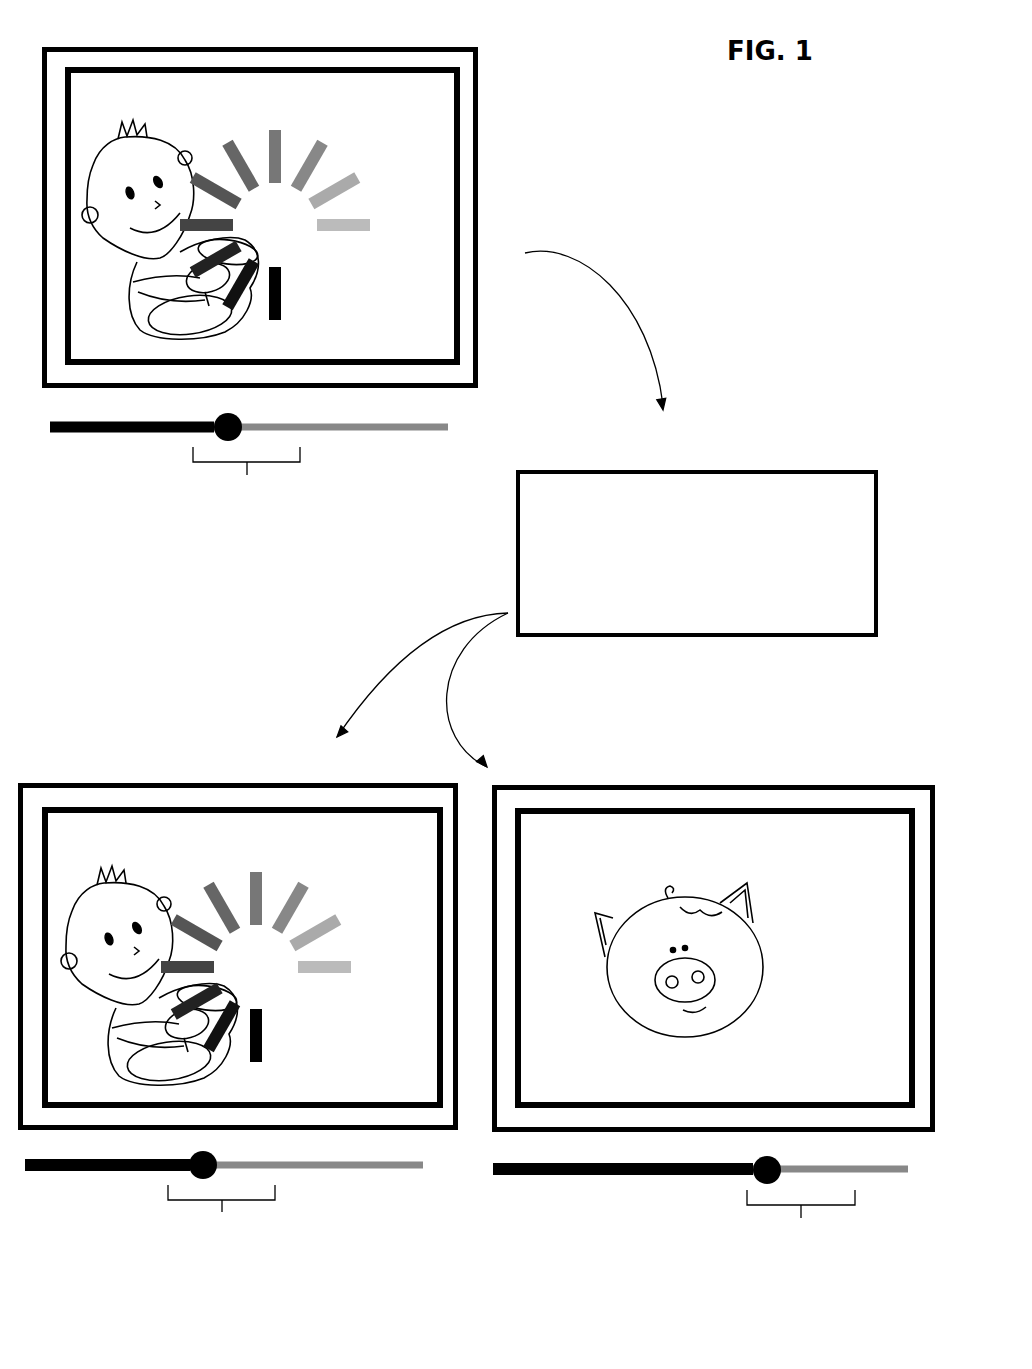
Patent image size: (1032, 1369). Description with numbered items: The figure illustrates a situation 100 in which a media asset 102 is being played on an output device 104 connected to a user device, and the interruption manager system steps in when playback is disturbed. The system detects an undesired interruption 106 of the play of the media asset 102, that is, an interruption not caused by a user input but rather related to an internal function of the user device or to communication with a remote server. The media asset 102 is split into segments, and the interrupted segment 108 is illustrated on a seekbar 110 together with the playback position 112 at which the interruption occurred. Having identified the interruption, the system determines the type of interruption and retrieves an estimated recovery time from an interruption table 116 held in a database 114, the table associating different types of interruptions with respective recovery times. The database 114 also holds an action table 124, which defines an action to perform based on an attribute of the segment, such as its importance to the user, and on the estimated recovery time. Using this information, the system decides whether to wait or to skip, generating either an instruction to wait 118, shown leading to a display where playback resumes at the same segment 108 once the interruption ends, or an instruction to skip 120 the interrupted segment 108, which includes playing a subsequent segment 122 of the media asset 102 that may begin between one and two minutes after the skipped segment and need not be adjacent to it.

The situation 100 is at (625, 97).
The media asset 102 is at (418, 124).
The output device 104 is at (130, 50).
The undesired interruption 106 is at (265, 122).
The segment 108 is at (234, 850).
The seekbar 110 is at (406, 436).
The playback position 112 is at (190, 437).
The database 114 is at (697, 553).
The interruption table 116 is at (860, 552).
The instruction to wait 118 is at (161, 752).
The instruction to skip the segment 120 is at (820, 752).
The subsequent segment 122 is at (801, 1224).
The action table 124 is at (785, 591).